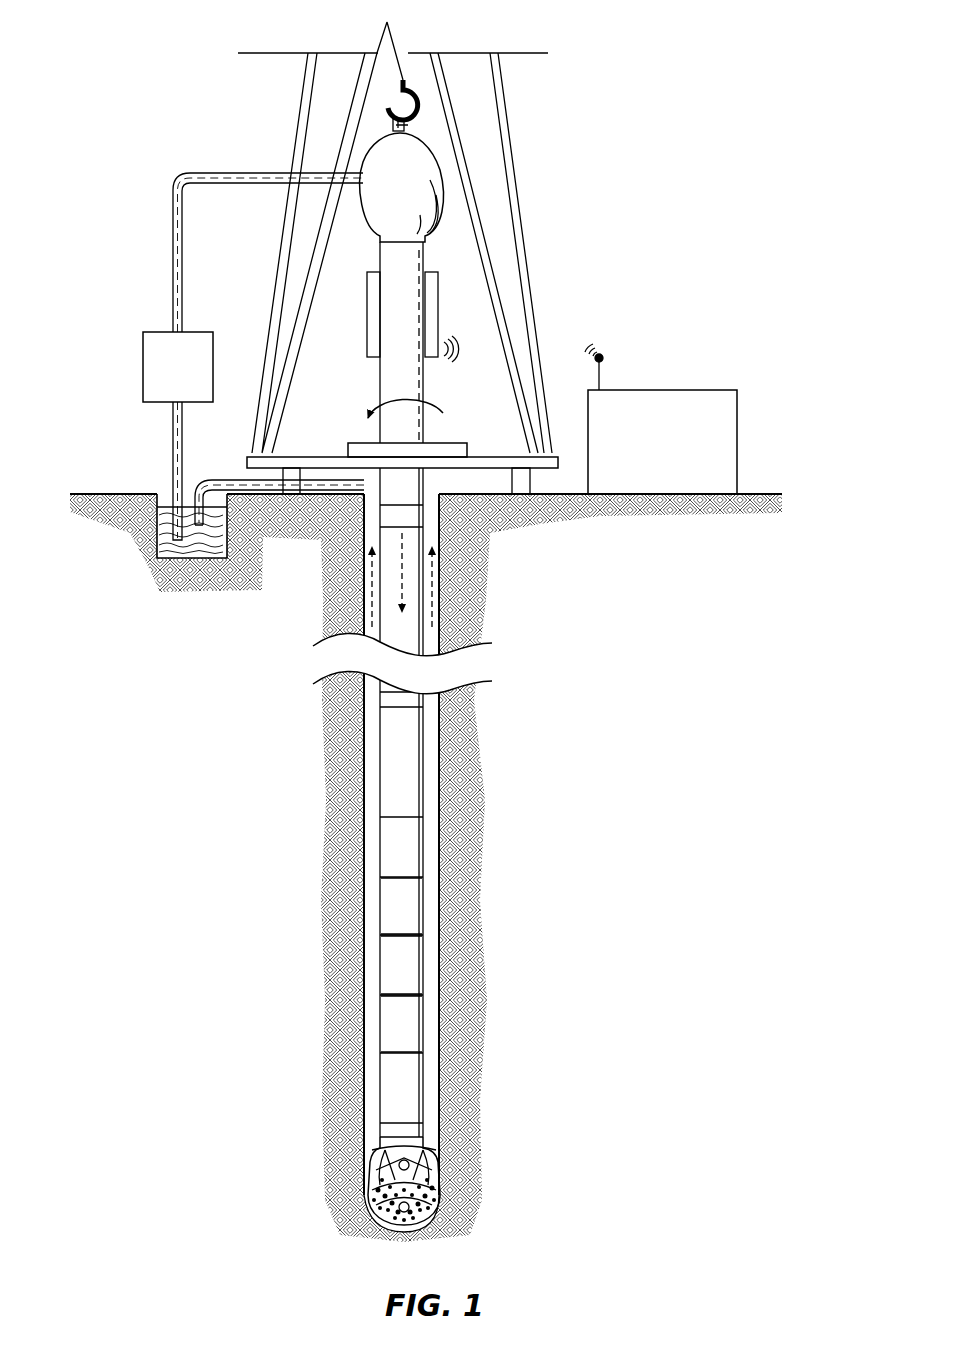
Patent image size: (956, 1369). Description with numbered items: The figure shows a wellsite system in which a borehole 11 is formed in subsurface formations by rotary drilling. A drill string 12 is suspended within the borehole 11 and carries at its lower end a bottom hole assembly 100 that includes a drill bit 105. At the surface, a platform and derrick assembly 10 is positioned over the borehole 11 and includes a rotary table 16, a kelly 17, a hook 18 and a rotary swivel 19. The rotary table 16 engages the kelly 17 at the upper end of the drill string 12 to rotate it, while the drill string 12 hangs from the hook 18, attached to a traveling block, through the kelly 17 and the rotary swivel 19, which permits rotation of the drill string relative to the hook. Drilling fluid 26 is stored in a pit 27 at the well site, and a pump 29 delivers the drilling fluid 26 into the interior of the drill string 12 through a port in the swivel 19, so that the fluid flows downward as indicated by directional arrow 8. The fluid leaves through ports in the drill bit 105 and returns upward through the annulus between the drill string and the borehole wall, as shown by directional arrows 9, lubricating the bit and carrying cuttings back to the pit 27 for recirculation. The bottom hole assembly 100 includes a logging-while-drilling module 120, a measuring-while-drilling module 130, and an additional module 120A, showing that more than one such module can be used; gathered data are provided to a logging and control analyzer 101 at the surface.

The platform and derrick assembly 10 is at (530, 152).
The borehole 11 is at (433, 508).
The drill string 12 is at (402, 505).
The rotary table 16 is at (447, 452).
The kelly 17 is at (385, 437).
The hook 18 is at (402, 83).
The rotary swivel 19 is at (374, 218).
The drilling fluid 26 is at (188, 552).
The pit 27 is at (165, 498).
The pump 29 is at (161, 403).
The directional arrow 8 is at (400, 583).
The directional arrows 9 is at (372, 562).
The bottom hole assembly 100 is at (503, 817).
The logging and control analyzer 101 is at (688, 363).
The drill bit 105 is at (377, 1170).
The logging-while-drilling module 120 is at (388, 905).
The measuring-while-drilling module 130 is at (388, 965).
The additional LWD/MWD module 120A is at (388, 1025).